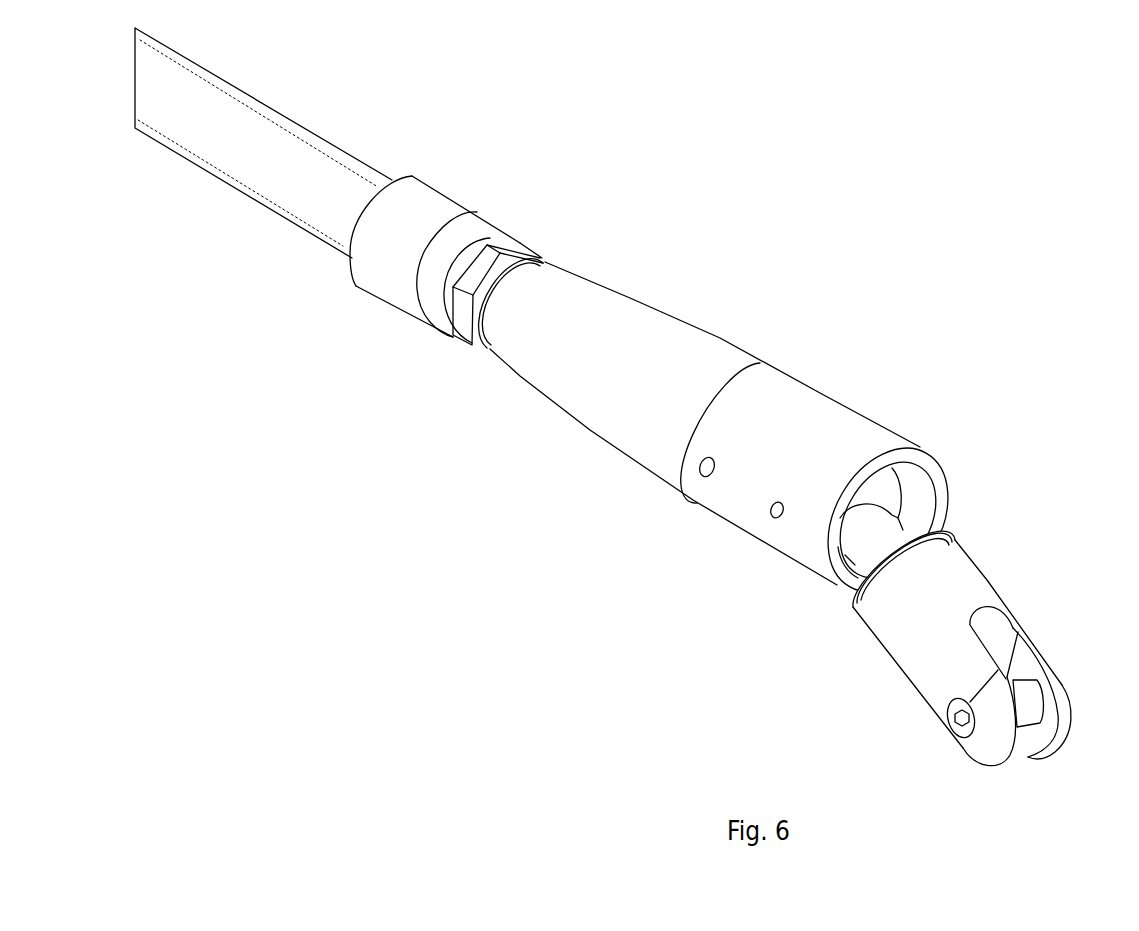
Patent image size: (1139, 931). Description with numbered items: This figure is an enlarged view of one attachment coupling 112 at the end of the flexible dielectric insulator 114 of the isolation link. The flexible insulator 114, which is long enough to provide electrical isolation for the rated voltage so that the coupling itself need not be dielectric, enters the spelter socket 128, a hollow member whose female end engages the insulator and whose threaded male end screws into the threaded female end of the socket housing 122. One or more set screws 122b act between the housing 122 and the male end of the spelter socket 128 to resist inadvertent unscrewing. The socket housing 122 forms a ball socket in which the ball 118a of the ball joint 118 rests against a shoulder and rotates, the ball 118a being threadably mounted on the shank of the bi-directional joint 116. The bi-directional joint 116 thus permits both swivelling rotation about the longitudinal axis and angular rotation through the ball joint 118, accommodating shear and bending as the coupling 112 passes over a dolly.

The attachment coupling 112 is at (813, 178).
The flexible dielectric insulator 114 is at (302, 108).
The bi-directional joint 116 is at (995, 520).
The ball joint 118 is at (896, 540).
The ball 118a is at (838, 555).
The socket housing 122 is at (795, 465).
The set screw 122b is at (707, 478).
The spelter socket 128 is at (588, 272).